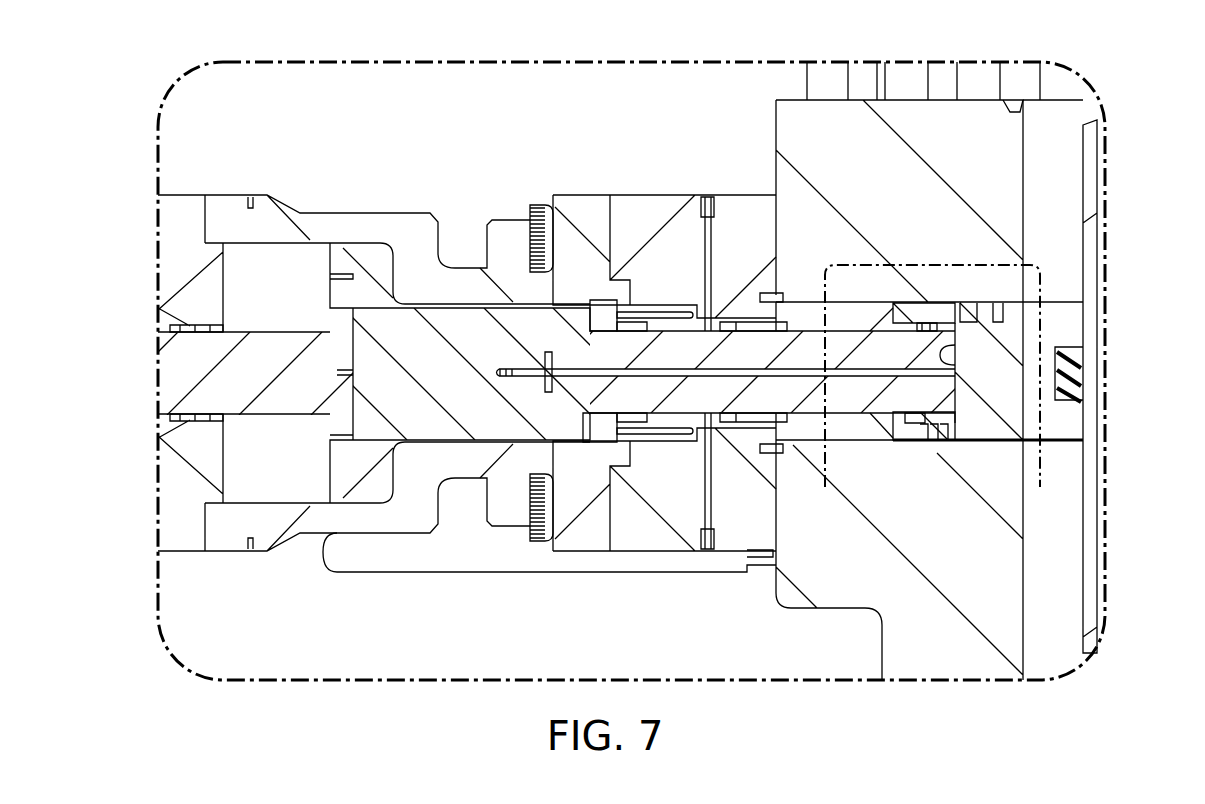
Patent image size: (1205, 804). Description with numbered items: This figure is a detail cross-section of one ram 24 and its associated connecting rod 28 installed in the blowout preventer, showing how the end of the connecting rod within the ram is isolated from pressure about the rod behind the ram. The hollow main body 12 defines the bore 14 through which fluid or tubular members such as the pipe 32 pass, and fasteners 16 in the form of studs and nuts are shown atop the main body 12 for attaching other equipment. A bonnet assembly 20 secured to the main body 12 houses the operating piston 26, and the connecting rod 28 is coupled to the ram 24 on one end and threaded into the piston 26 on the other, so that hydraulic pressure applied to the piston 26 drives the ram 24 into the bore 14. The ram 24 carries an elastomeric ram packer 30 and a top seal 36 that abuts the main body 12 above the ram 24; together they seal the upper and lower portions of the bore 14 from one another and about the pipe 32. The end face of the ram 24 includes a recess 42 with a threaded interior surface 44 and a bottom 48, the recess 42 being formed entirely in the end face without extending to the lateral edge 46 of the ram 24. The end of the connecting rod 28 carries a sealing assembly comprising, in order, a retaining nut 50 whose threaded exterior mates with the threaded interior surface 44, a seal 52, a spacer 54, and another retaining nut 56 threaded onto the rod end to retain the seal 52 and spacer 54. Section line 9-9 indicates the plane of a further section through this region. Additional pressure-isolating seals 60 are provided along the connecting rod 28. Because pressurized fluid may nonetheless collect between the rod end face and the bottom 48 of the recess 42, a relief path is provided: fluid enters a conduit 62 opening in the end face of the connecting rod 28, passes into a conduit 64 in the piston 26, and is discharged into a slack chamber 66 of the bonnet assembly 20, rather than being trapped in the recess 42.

The section line 9- 9 is at (825, 487).
The main body 12 is at (802, 133).
The bore 14 is at (1023, 200).
The fasteners 16 is at (828, 72).
The bonnet assembly 20 is at (494, 188).
The ram 24 is at (928, 313).
The piston 26 is at (337, 482).
The connecting rod 28 is at (688, 348).
The ram packer 30 is at (1070, 340).
The pipe 32 is at (1090, 122).
The top seal 36 is at (985, 310).
The recess 42 is at (925, 327).
The threaded interior surface 44 is at (905, 415).
The lateral edge 46 is at (910, 440).
The bottom of the recess 48 is at (948, 352).
The retaining nut 50 is at (922, 440).
The seal 52 is at (935, 440).
The spacer 54 is at (945, 440).
The retaining nut 56 is at (940, 435).
The seals 60 is at (752, 434).
The conduit 62 is at (760, 378).
The conduit 64 is at (525, 375).
The chamber 66 is at (483, 440).